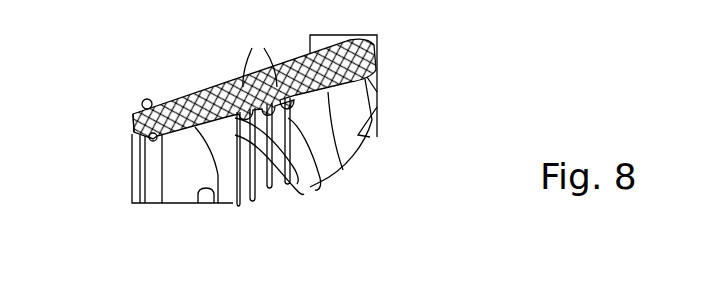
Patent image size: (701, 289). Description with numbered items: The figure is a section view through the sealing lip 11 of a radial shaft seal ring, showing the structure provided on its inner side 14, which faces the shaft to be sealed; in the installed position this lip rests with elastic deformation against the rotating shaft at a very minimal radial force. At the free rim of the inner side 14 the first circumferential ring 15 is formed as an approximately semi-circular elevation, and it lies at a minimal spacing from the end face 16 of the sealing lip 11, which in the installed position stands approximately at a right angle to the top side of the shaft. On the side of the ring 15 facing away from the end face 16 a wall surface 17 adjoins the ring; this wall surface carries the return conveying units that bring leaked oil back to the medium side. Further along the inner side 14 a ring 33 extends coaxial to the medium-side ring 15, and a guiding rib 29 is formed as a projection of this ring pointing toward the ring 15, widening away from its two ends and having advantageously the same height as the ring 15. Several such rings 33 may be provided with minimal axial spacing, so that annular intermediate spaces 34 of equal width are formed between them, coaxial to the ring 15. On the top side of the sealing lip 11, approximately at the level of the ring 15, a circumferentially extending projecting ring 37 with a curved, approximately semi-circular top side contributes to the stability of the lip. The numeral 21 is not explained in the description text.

The sealing lip 11 is at (208, 82).
The edge portion 21 is at (190, 6).
The projecting ring 37 is at (142, 104).
The end face 16 is at (133, 122).
The first circumferential ring 15 is at (155, 133).
The wall surface 17 is at (180, 128).
The ring 33 is at (256, 44).
The guiding rib 29 is at (252, 172).
The annular intermediate space 34 is at (310, 186).
The inner side 14 is at (345, 165).